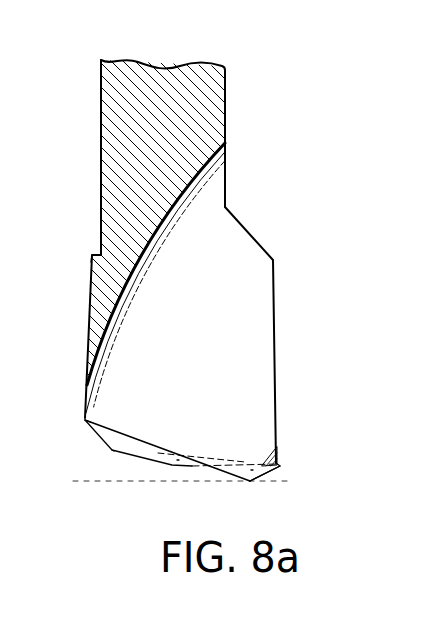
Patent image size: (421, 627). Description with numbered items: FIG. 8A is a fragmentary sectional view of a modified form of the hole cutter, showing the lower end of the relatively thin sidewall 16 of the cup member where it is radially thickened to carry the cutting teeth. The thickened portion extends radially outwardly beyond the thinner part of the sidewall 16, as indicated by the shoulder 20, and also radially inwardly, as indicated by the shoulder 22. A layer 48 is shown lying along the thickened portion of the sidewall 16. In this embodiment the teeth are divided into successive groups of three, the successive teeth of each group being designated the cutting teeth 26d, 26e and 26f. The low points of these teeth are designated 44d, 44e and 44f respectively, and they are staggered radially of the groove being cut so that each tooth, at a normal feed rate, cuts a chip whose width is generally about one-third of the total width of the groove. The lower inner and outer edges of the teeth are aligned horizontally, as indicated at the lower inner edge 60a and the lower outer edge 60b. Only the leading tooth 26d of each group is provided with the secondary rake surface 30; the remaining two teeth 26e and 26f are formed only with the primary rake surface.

The sidewall 16 is at (217, 90).
The bonded layer 48 is at (213, 195).
The shoulder 20 is at (247, 228).
The shoulder 22 is at (97, 255).
The lower inner edge 60a is at (85, 420).
The lower outer edge 60b is at (281, 466).
The low point 44f is at (108, 450).
The low point 44e is at (176, 468).
The low point 44d is at (243, 481).
The cutting tooth 26f is at (113, 450).
The cutting tooth 26e is at (177, 460).
The cutting tooth 26d is at (251, 470).
The secondary rake surface 30 is at (279, 458).